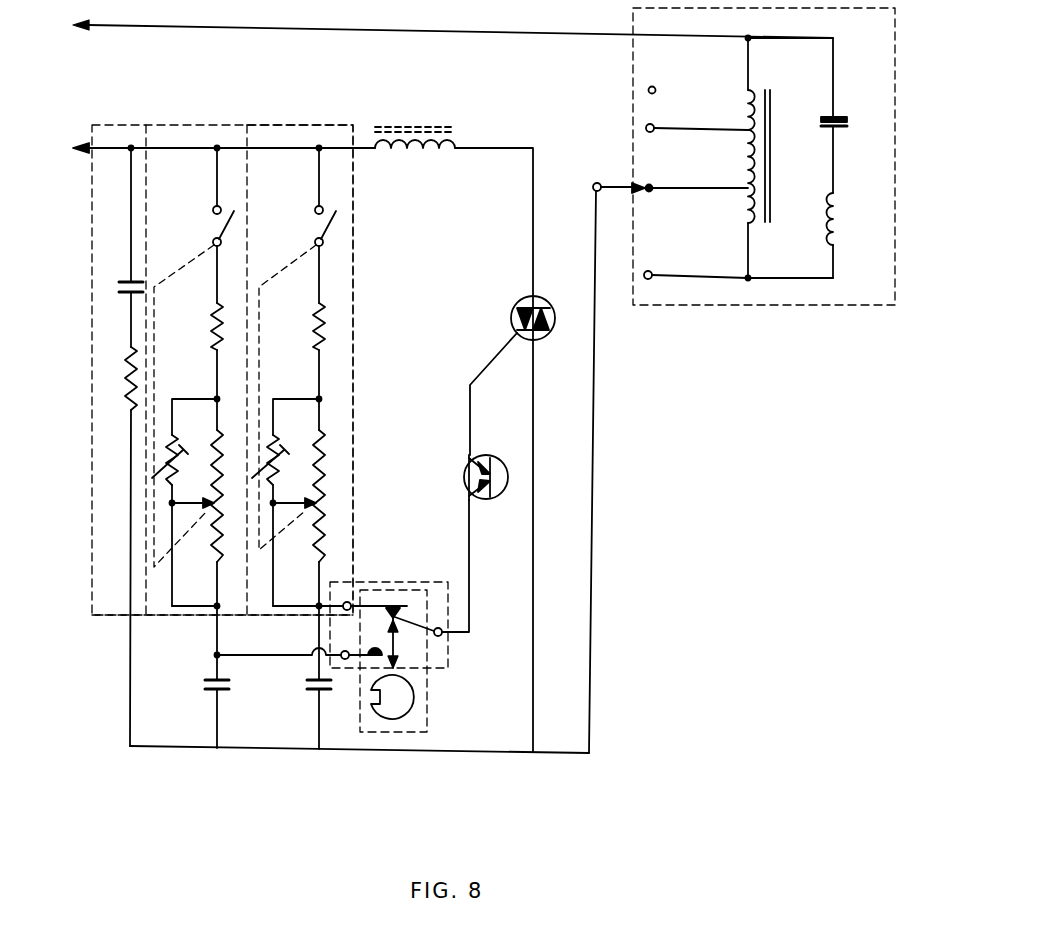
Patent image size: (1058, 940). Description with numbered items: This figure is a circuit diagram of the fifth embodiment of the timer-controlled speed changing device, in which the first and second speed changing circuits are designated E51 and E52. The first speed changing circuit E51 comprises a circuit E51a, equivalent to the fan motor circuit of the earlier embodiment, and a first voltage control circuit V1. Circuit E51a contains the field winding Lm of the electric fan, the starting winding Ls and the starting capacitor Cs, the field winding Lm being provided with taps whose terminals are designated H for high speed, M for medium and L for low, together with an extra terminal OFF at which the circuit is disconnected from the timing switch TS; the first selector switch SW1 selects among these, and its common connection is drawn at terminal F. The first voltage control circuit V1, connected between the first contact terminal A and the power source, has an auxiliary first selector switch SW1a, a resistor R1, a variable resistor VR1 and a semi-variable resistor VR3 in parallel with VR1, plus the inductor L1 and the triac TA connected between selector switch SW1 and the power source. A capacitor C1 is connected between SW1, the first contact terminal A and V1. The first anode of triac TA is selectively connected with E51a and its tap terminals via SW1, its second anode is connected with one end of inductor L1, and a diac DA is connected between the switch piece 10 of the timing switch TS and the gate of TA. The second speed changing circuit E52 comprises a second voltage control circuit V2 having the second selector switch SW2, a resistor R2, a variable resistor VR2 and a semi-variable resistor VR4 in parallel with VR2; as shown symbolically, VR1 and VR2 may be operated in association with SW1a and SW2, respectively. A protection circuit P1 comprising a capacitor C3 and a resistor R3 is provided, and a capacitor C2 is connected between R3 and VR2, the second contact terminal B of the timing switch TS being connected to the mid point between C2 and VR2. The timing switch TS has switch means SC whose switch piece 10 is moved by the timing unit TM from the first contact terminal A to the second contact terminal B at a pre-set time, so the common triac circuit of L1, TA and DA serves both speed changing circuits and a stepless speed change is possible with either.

The second voltage control circuit V2 is at (208, 120).
The first voltage control circuit V1 is at (297, 120).
The first speed changing circuit E51 is at (620, 72).
The circuit equivalent to the first speed changing circuit of the first embodiment E51a is at (782, 316).
The second speed changing circuit E52 is at (175, 628).
The protection circuit P1 is at (110, 622).
The first selector switch SW1 is at (661, 157).
The extra terminal OFF is at (677, 92).
The tap terminal for high speed H is at (697, 147).
The tap terminal for medium speed M is at (681, 212).
The tap terminal for low speed L is at (696, 266).
The field winding Lm is at (790, 158).
The starting capacitor Cs is at (814, 115).
The starting winding Ls is at (850, 235).
The terminal F is at (600, 465).
The inductor L1 is at (454, 211).
The second selector switch SW2 is at (218, 357).
The auxiliary first selector switch SW1a is at (328, 349).
The capacitor C3 is at (111, 247).
The resistor R3 is at (110, 378).
The resistor R2 is at (233, 366).
The resistor R1 is at (335, 366).
The semi-variable resistor VR4 is at (181, 489).
The semi-variable resistor VR3 is at (273, 502).
The variable resistor VR2 is at (220, 519).
The variable resistor VR1 is at (322, 519).
The triac TA is at (507, 524).
The diac DA is at (465, 477).
The switch means SC is at (389, 603).
The first contact terminal A is at (363, 595).
The second contact terminal B is at (299, 645).
The switch piece 10 is at (406, 624).
The capacitor C2 is at (230, 677).
The capacitor C1 is at (331, 677).
The timing switch TS is at (412, 661).
The timing unit TM is at (392, 720).